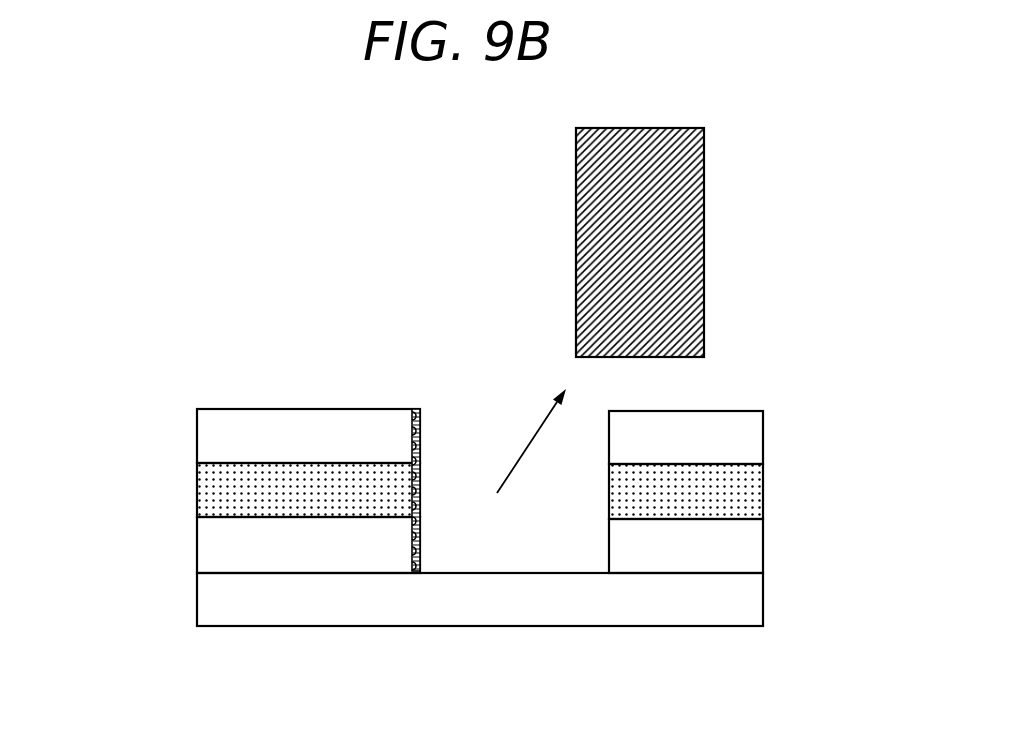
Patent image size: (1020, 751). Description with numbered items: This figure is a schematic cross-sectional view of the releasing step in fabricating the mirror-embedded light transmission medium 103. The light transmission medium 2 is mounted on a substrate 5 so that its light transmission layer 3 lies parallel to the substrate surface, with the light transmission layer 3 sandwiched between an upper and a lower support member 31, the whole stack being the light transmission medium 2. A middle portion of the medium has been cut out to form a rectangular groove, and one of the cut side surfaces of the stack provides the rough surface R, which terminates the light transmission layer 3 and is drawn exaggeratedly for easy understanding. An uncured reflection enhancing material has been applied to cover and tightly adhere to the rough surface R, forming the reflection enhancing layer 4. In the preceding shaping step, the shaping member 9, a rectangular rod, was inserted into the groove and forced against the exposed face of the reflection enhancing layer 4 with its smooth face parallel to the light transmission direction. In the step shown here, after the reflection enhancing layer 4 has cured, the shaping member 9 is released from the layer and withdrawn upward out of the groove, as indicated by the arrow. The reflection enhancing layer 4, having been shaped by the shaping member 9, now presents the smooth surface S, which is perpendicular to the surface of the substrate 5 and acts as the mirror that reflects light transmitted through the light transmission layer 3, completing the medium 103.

The mirror-embedded light transmission medium 103 is at (177, 357).
The light transmission medium 2 is at (123, 407).
The support member 31 is at (205, 435).
The light transmission layer 3 is at (205, 489).
The reflection enhancing layer 4 is at (410, 412).
The substrate 5 is at (203, 593).
The shaping member 9 is at (576, 210).
The rough surface R is at (403, 450).
The smooth surface S is at (423, 453).